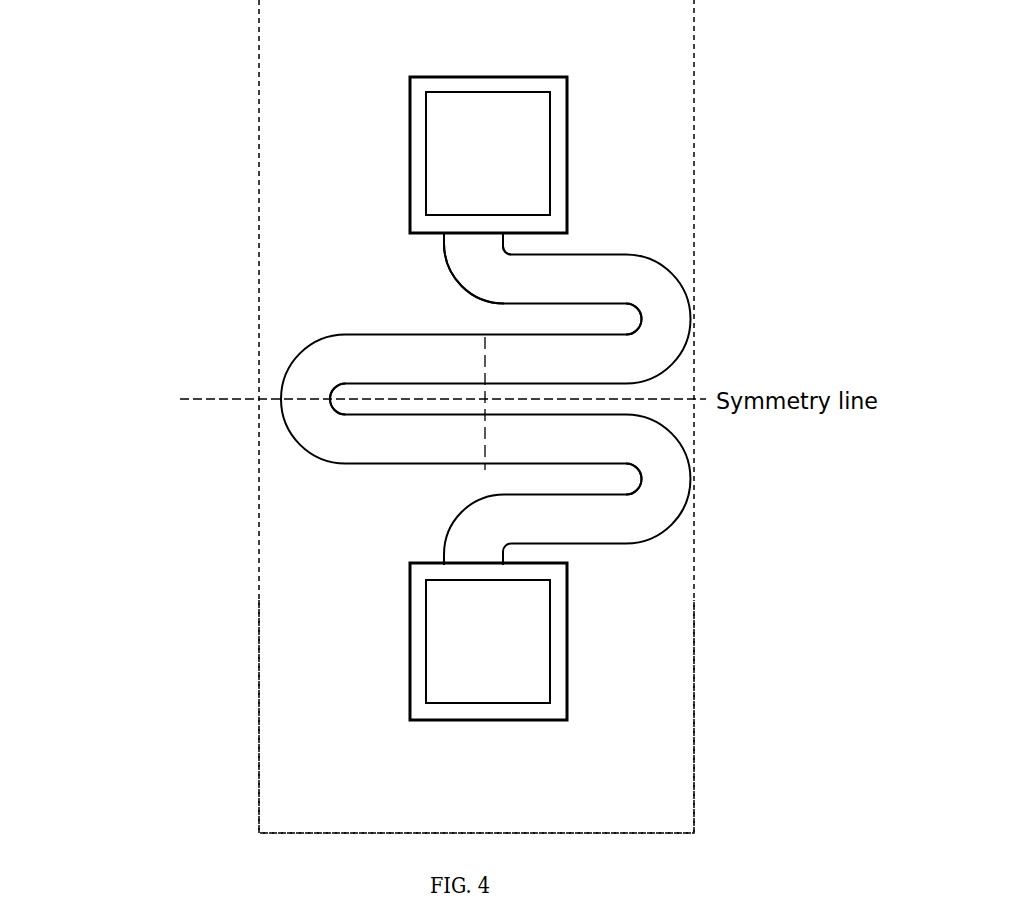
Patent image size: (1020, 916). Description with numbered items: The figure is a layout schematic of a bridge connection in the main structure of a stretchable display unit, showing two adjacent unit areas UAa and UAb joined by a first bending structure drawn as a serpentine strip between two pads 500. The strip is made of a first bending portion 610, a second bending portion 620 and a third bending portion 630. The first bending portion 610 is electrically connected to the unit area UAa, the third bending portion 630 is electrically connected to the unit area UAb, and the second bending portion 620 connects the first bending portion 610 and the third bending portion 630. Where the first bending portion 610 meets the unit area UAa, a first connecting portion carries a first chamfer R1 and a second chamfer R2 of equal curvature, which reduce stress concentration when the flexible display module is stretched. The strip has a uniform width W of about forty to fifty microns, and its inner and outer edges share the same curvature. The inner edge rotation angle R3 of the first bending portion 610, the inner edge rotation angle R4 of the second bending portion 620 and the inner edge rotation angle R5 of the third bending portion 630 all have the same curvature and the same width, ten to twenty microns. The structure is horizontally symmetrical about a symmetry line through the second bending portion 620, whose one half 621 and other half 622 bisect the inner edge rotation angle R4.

The pad / electrode 500 is at (488, 398).
The first bending portion 610 is at (680, 320).
The second bending portion 620 is at (265, 398).
The one half of the second bending portion 621 is at (314, 358).
The other half of the second bending portion 622 is at (308, 436).
The third bending portion 630 is at (670, 505).
The unit area UAa is at (705, 30).
The unit area UAb is at (705, 680).
The first chamfer R1 is at (431, 268).
The second chamfer R2 is at (543, 243).
The inner edge rotation angle of the first bending portion R3 is at (630, 320).
The inner edge rotation angle of the second bending portion R4 is at (354, 405).
The inner edge rotation angle of the third bending portion R5 is at (630, 473).
The wiring width W is at (460, 337).